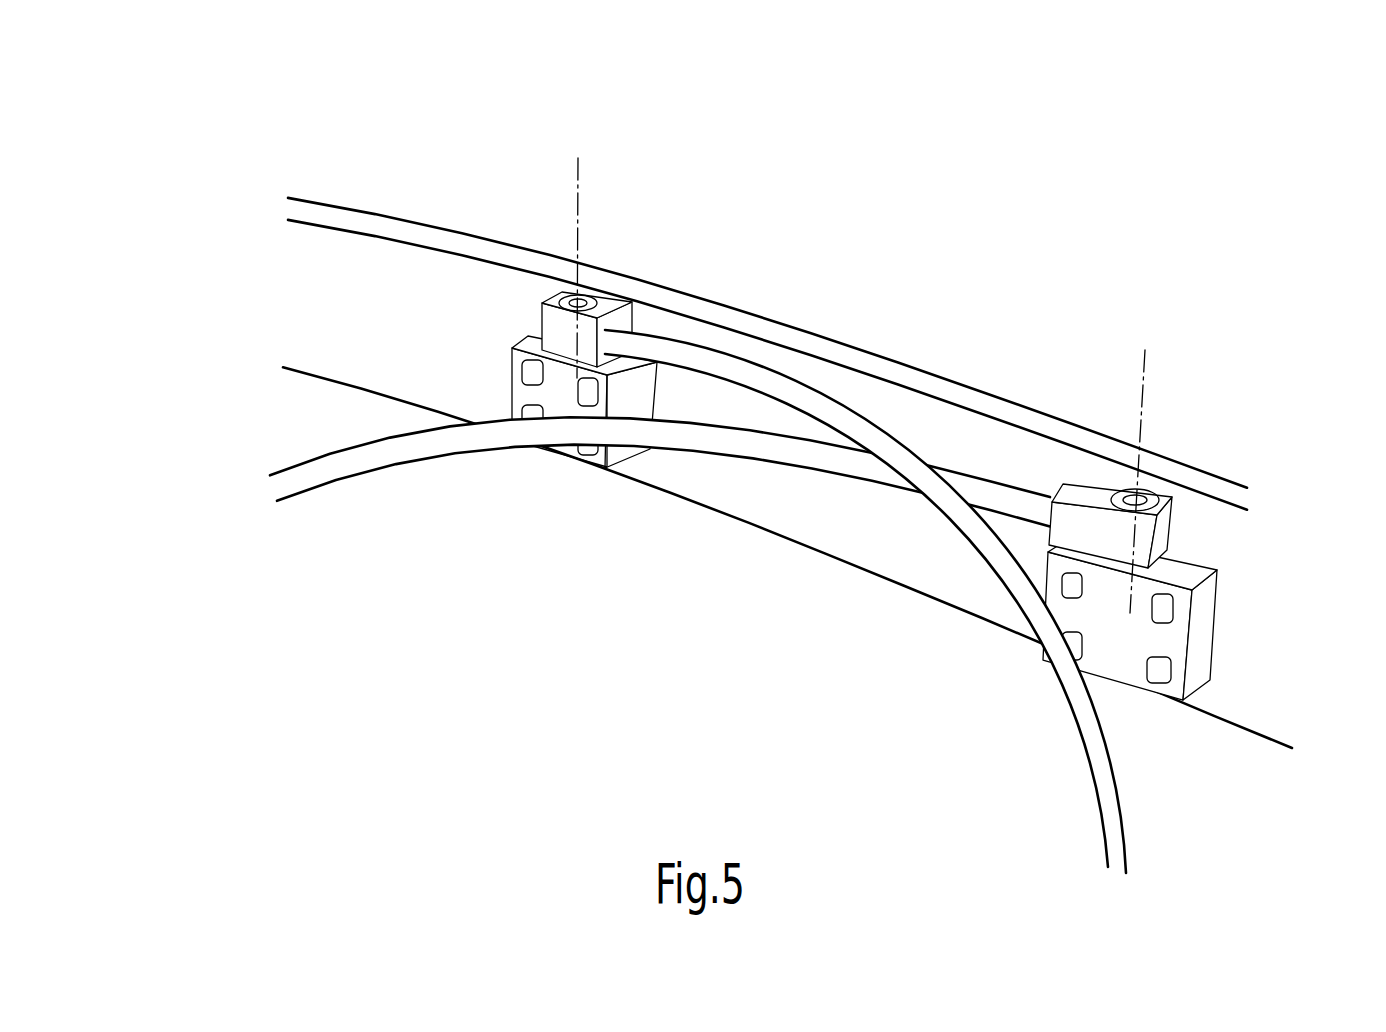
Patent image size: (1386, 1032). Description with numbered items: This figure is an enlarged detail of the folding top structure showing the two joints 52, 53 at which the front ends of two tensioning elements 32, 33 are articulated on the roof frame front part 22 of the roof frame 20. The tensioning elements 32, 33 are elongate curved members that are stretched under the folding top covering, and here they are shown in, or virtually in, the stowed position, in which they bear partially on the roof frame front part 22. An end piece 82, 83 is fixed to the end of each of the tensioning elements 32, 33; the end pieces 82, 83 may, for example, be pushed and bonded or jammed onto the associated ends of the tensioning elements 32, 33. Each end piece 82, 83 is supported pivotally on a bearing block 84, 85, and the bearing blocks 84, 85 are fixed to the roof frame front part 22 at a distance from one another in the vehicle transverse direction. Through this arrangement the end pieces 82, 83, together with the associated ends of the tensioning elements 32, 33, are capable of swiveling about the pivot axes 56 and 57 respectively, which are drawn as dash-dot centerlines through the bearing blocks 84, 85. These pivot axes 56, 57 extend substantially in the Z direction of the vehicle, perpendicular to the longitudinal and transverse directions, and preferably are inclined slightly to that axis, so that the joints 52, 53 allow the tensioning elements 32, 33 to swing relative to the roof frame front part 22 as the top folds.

The roof frame 20 is at (345, 210).
The roof frame front part 22 is at (932, 420).
The tensioning element 32 is at (1100, 762).
The tensioning element 33 is at (393, 452).
The joint 52 is at (608, 264).
The joint 53 is at (1163, 450).
The pivot axis 56 is at (578, 200).
The pivot axis 57 is at (1142, 390).
The end piece 82 is at (557, 328).
The end piece 83 is at (1088, 532).
The bearing block 84 is at (530, 395).
The bearing block 85 is at (1167, 638).